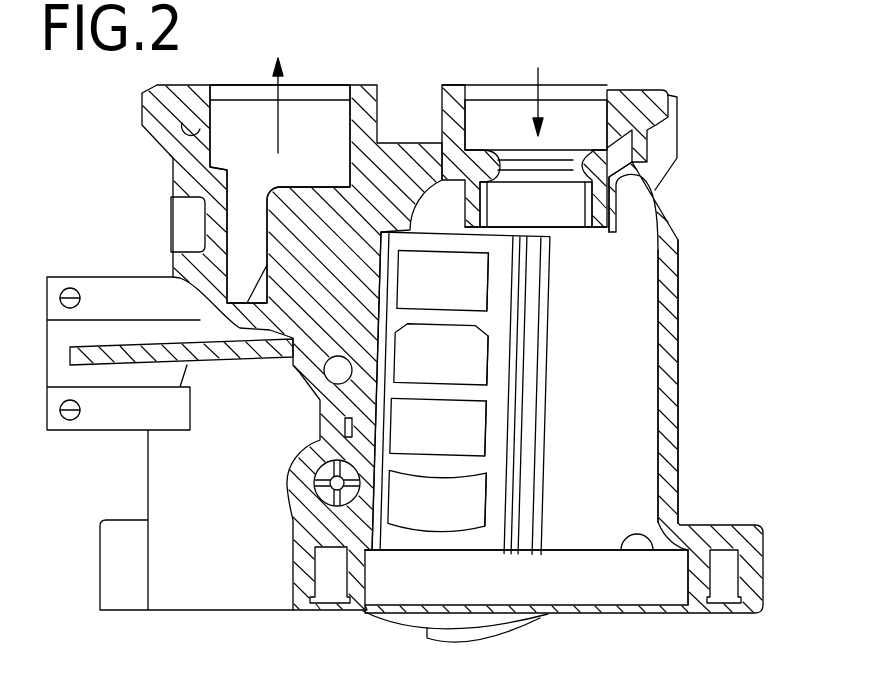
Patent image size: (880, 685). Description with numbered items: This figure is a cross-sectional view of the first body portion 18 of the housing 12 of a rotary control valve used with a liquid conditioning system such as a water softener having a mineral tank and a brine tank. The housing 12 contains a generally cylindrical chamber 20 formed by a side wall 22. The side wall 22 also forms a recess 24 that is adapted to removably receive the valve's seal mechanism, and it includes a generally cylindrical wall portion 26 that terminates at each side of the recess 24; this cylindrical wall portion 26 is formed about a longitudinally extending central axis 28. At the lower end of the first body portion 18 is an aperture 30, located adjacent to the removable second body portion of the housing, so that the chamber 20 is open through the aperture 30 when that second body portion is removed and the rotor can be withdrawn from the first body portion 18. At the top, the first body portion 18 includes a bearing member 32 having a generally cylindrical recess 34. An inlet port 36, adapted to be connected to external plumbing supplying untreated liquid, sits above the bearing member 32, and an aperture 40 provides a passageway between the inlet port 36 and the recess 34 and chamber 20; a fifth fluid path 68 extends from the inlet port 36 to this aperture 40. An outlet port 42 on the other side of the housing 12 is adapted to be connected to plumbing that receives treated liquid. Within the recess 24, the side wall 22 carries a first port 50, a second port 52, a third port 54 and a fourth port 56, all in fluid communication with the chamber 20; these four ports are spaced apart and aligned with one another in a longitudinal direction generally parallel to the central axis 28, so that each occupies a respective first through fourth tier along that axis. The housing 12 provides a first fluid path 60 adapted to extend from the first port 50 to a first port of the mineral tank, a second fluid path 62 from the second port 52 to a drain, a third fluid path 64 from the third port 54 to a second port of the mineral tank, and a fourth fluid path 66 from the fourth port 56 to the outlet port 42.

The housing 12 is at (674, 172).
The first body portion 18 is at (680, 260).
The generally cylindrical chamber 20 is at (630, 302).
The side wall 22 is at (487, 537).
The recess 24 is at (420, 540).
The generally cylindrical wall portion 26 is at (657, 436).
The central axis 28 is at (538, 625).
The aperture 30 is at (620, 543).
The bearing member 32 is at (610, 213).
The generally cylindrical recess 34 is at (562, 213).
The inlet port 36 is at (608, 88).
The aperture 40 is at (500, 173).
The outlet port 42 is at (351, 97).
The first port 50 is at (396, 498).
The second port 52 is at (396, 423).
The third port 54 is at (399, 346).
The fourth port 56 is at (399, 272).
The first fluid path 60 is at (477, 498).
The second fluid path 62 is at (478, 423).
The third fluid path 64 is at (478, 357).
The fourth fluid path 66 is at (478, 284).
The fifth fluid path 68 is at (579, 117).